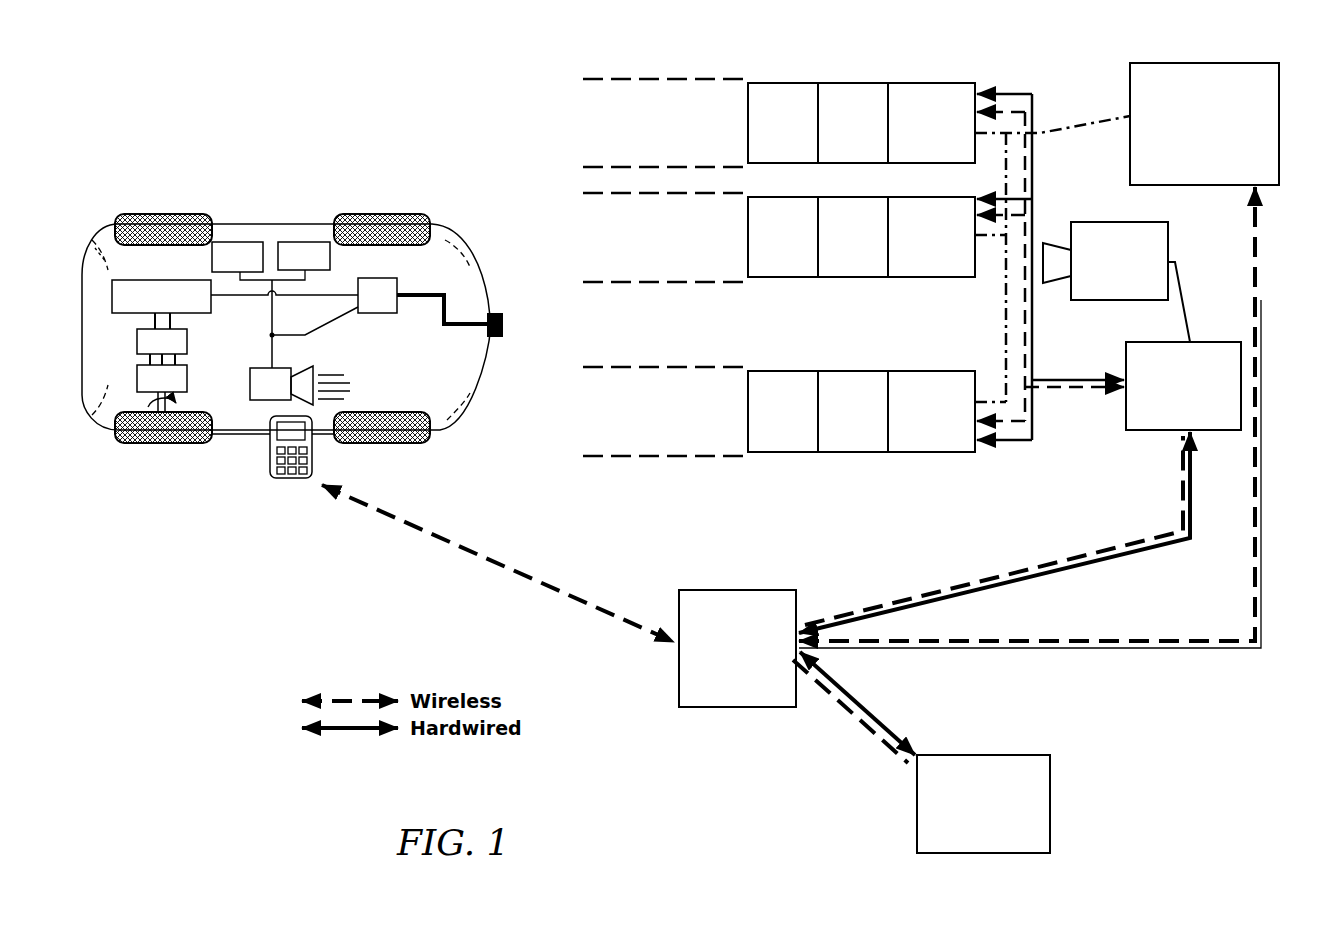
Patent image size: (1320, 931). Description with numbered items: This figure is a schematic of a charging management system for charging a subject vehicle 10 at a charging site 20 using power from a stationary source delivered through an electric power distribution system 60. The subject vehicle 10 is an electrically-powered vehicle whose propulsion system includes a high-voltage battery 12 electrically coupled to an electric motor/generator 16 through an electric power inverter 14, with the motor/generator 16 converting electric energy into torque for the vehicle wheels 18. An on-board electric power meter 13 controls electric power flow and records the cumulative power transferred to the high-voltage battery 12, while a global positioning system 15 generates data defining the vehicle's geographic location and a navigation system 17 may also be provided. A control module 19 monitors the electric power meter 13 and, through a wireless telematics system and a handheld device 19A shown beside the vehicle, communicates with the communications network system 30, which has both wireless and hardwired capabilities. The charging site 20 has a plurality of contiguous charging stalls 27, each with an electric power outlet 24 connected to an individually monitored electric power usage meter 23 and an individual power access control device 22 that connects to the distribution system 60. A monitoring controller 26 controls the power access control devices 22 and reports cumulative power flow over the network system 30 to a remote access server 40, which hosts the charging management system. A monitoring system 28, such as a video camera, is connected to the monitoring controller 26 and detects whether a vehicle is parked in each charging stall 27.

The subject vehicle 10 is at (106, 440).
The high-voltage battery 12 is at (112, 296).
The electric power meter 13 is at (378, 314).
The electric power inverter 14 is at (137, 342).
The global positioning system 15 is at (238, 242).
The electric motor/generator 16 is at (137, 385).
The navigation system 17 is at (304, 242).
The vehicle wheels 18 is at (162, 446).
The control module 19 is at (257, 370).
The mobile device 19A is at (270, 470).
The charging site 20 is at (832, 239).
The power access control device 22 is at (931, 267).
The electric power usage meter 23 is at (853, 267).
The electric power outlet 24 is at (783, 267).
The monitoring controller 26 is at (1183, 386).
The charging stall 27 is at (664, 267).
The monitoring system 28 is at (1116, 282).
The communications network system 30 is at (737, 648).
The remote access server 40 is at (983, 804).
The electric power distribution system 60 is at (1204, 124).